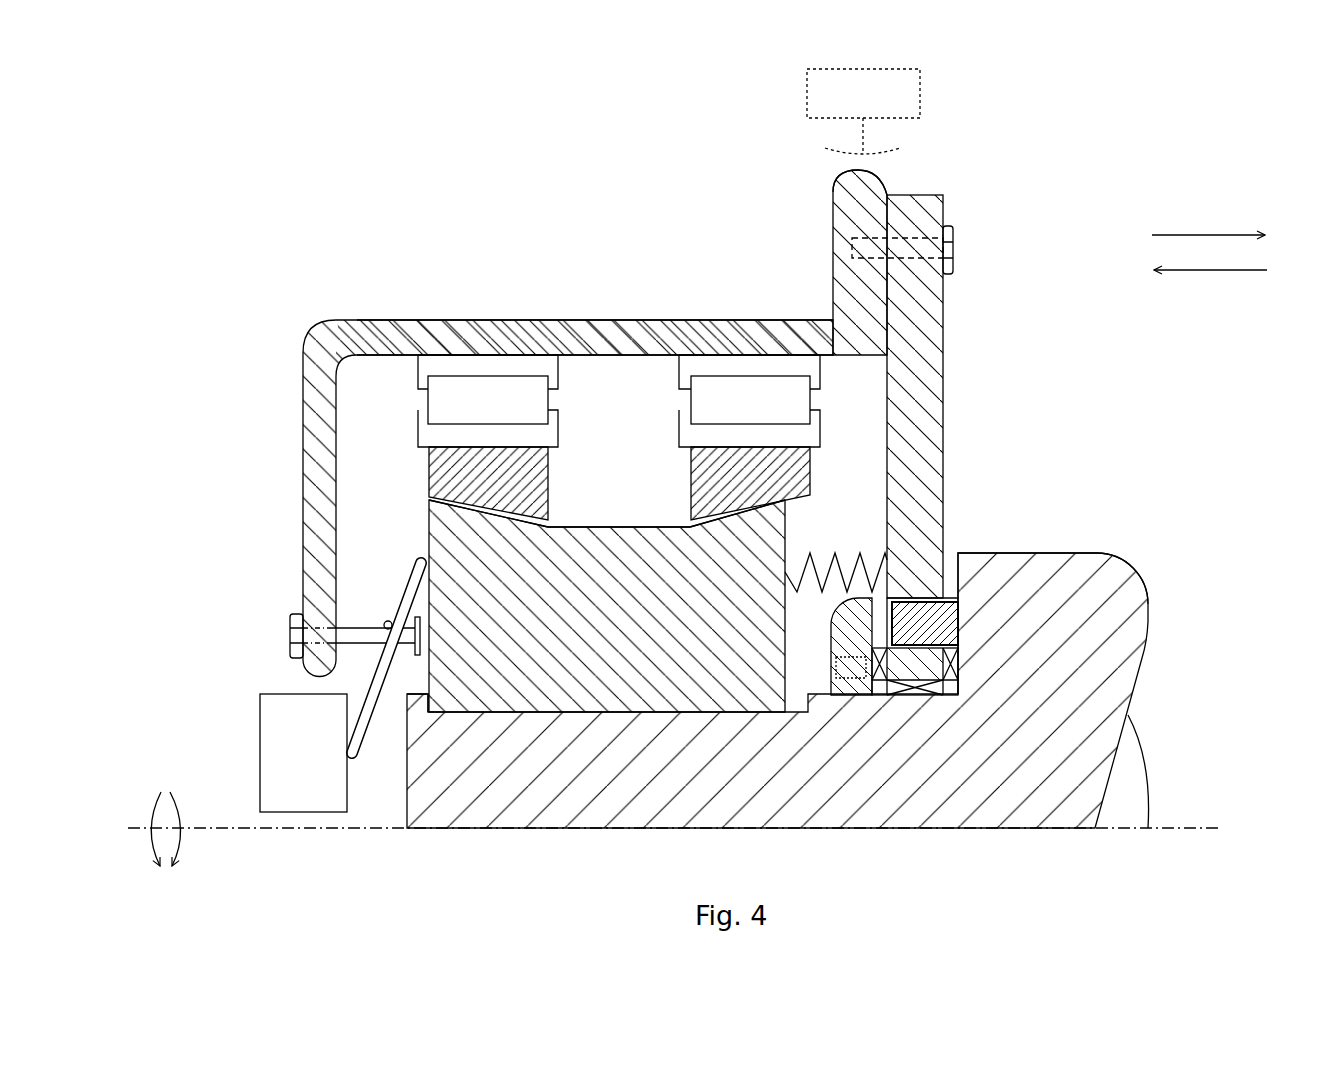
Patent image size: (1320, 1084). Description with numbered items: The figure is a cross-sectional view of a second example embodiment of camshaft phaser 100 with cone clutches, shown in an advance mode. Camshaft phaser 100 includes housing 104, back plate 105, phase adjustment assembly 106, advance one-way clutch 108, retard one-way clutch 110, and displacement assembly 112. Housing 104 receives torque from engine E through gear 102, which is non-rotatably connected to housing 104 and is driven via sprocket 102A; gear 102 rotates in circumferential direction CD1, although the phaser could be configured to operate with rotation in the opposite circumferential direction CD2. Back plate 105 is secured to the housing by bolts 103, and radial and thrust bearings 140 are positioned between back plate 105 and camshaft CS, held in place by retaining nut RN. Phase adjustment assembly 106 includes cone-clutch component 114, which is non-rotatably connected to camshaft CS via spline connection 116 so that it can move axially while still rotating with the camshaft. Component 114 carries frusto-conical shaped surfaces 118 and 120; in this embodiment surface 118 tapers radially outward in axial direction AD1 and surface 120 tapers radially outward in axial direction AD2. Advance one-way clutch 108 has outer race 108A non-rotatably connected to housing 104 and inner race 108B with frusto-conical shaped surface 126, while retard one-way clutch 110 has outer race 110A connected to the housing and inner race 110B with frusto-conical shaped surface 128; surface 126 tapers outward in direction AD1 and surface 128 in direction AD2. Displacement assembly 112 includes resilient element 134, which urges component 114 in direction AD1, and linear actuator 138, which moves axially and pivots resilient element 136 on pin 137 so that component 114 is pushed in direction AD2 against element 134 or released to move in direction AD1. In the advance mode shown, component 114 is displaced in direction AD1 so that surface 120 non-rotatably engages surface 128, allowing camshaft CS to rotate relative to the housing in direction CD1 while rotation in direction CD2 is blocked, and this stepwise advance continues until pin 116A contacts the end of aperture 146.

The camshaft phaser 100 is at (333, 152).
The gear 102 is at (830, 205).
The sprocket 102A is at (845, 178).
The bolts 103 is at (948, 222).
The housing 104 is at (572, 316).
The back plate 105 is at (946, 298).
The phase adjustment assembly 106 is at (386, 504).
The advance one-way clutch 108 is at (417, 400).
The outer race 108A is at (456, 350).
The inner race 108B is at (524, 416).
The retard one-way clutch 110 is at (670, 402).
The outer race 110A is at (720, 350).
The inner race 110B is at (781, 416).
The displacement assembly 112 is at (206, 606).
The cone-clutch component 114 is at (539, 716).
The spline connection 116 is at (424, 698).
The pin 116A is at (950, 597).
The frusto-conical shaped surface 118 is at (488, 502).
The frusto-conical shaped surface 120 is at (765, 496).
The frusto-conical shaped surface 126 is at (493, 499).
The frusto-conical shaped surface 128 is at (713, 508).
The resilient element 134 is at (847, 550).
The resilient element 136 is at (377, 724).
The pin 137 is at (287, 631).
The linear actuator 138 is at (257, 712).
The radial and thrust bearings 140 is at (950, 686).
The aperture 146 is at (925, 598).
The camshaft CS is at (669, 781).
The retaining nut RN is at (851, 668).
The engine E is at (871, 107).
The axial direction AD1 is at (1207, 270).
The axial direction AD2 is at (1188, 235).
The circumferential direction CD1 is at (183, 848).
The circumferential direction CD2 is at (152, 818).